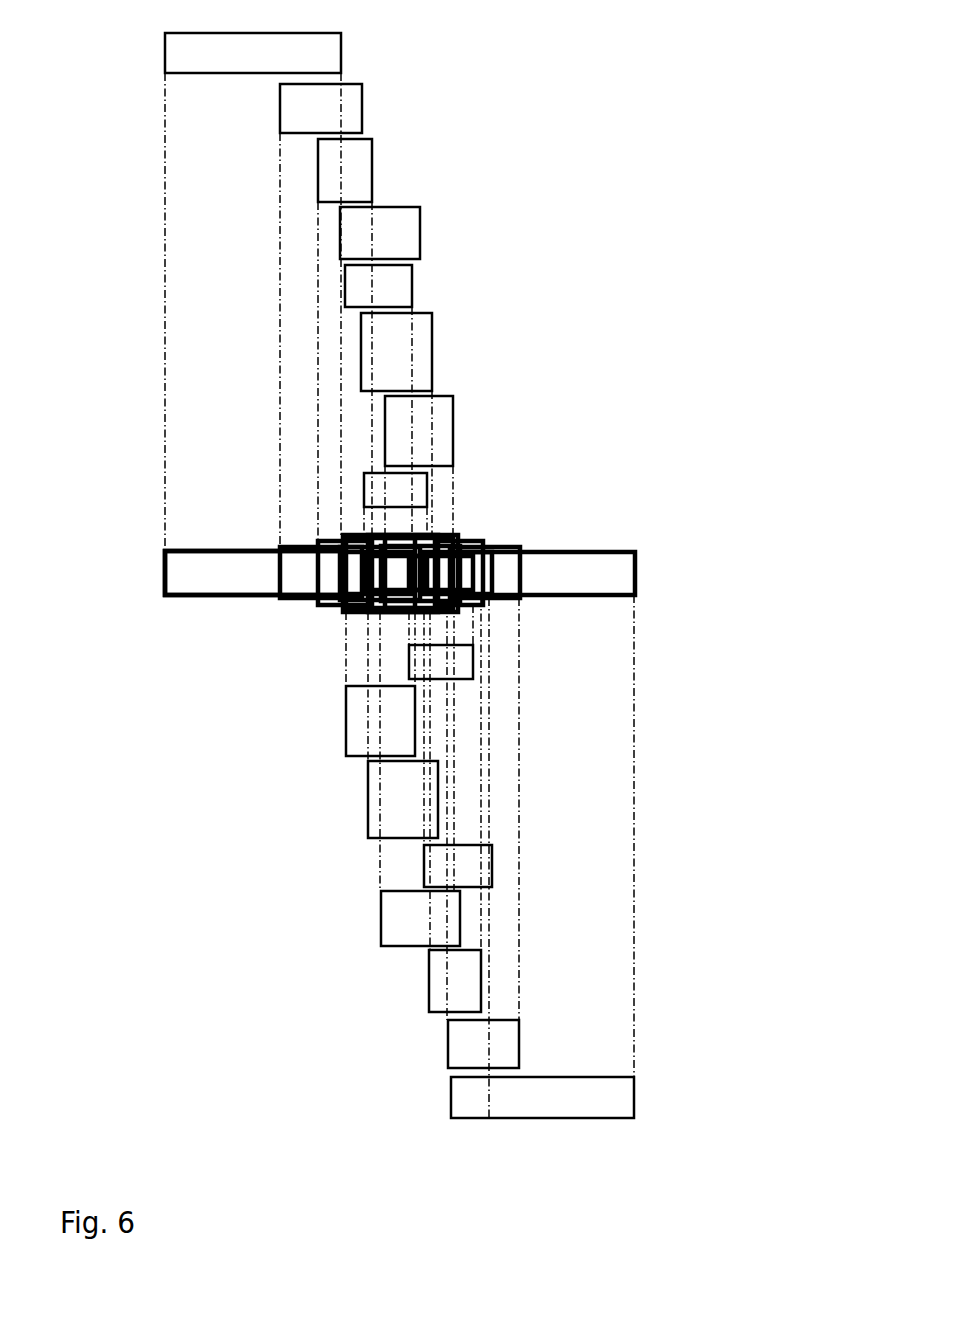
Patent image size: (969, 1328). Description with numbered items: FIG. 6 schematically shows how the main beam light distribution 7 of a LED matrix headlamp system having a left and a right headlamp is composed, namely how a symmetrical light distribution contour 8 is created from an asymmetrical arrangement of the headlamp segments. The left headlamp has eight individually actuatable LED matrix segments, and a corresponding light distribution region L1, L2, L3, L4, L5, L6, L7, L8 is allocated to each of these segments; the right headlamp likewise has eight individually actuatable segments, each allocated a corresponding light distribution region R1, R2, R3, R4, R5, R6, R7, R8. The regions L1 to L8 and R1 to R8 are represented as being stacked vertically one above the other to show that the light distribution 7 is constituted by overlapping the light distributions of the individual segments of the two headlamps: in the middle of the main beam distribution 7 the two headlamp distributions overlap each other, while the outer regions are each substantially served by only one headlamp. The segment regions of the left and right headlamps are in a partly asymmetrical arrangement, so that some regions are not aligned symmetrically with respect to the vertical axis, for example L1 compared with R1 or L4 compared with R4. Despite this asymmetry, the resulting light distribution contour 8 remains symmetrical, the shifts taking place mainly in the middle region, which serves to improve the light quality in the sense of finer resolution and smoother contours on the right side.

The light distribution 7 is at (140, 570).
The light distribution contour 8 is at (636, 573).
The light distribution region L1 is at (420, 493).
The light distribution region L2 is at (442, 418).
The light distribution region L3 is at (417, 358).
The light distribution region L4 is at (395, 292).
The light distribution region L5 is at (395, 233).
The light distribution region L6 is at (363, 165).
The light distribution region L7 is at (355, 108).
The light distribution region L8 is at (330, 50).
The light distribution region R1 is at (412, 665).
The light distribution region R2 is at (367, 710).
The light distribution region R3 is at (382, 785).
The light distribution region R4 is at (437, 867).
The light distribution region R5 is at (393, 931).
The light distribution region R6 is at (428, 985).
The light distribution region R7 is at (447, 1043).
The light distribution region R8 is at (470, 1103).